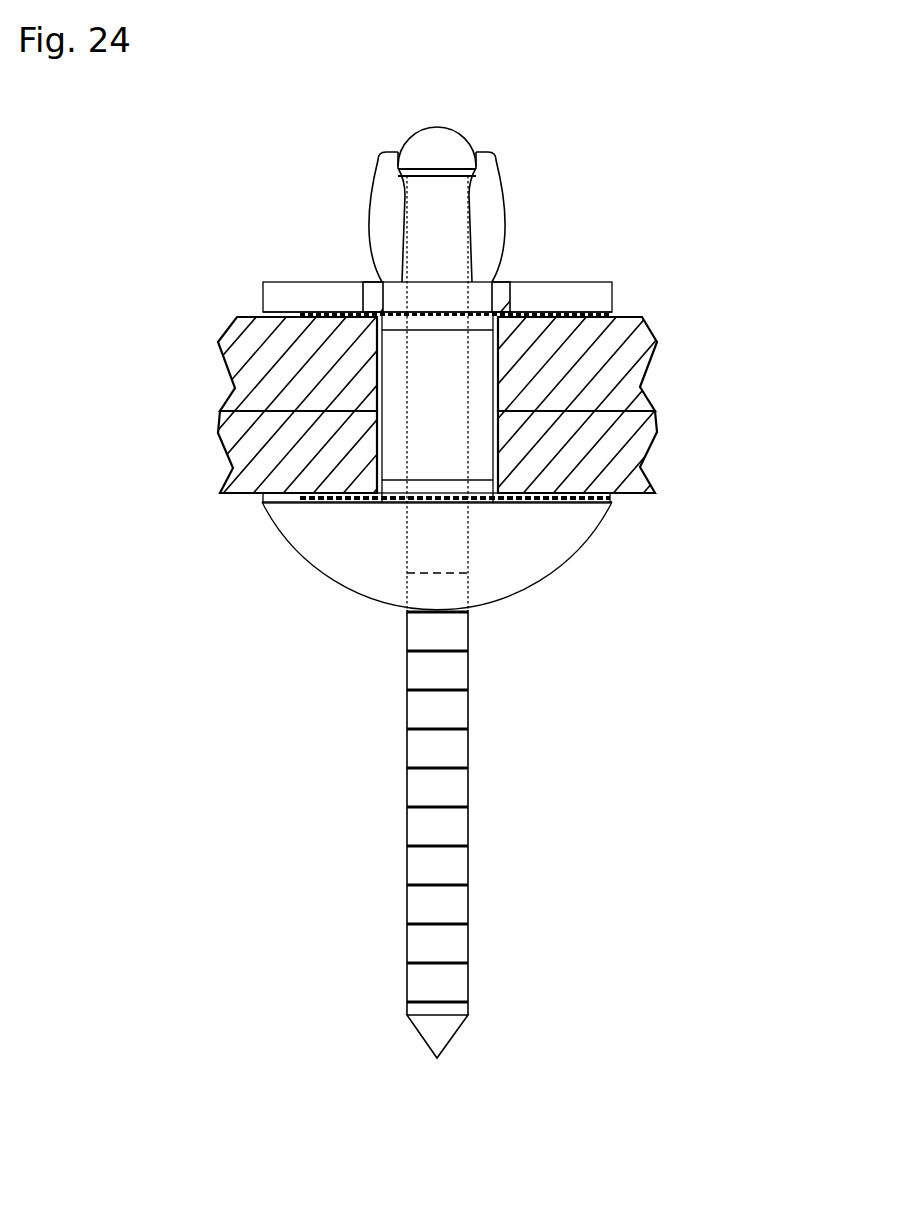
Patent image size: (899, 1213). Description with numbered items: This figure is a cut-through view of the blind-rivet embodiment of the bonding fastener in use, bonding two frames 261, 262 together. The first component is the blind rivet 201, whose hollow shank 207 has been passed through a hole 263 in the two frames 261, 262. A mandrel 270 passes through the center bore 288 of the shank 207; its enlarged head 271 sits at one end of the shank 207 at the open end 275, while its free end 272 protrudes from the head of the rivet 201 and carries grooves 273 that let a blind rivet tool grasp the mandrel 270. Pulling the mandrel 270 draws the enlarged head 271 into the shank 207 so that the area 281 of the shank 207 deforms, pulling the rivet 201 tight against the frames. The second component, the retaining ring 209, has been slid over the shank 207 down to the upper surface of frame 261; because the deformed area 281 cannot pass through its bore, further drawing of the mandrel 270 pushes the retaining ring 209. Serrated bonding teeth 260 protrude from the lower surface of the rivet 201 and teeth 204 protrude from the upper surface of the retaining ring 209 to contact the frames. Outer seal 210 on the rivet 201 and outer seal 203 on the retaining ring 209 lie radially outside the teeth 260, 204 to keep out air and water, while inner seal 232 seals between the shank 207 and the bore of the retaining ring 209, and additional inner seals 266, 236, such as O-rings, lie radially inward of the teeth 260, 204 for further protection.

The blind rivet 201 is at (530, 570).
The outer seal 203 is at (612, 318).
The serrated bonding teeth 204 is at (558, 313).
The shank 207 is at (505, 203).
The retaining ring 209 is at (595, 288).
The outer seal 210 is at (612, 497).
The inner seal 232 is at (368, 300).
The additional inner seal 236 is at (312, 310).
The serrated bonding teeth 260 is at (550, 488).
The frame 261 is at (232, 372).
The frame 262 is at (218, 438).
The hole 263 is at (378, 463).
The additional inner seal 266 is at (352, 503).
The mandrel 270 is at (440, 710).
The enlarged head 271 is at (460, 135).
The free end 272 is at (452, 1028).
The grooves 273 is at (408, 769).
The open end 275 is at (398, 157).
The deformed area of the shank 281 is at (370, 234).
The center bore 288 is at (400, 207).